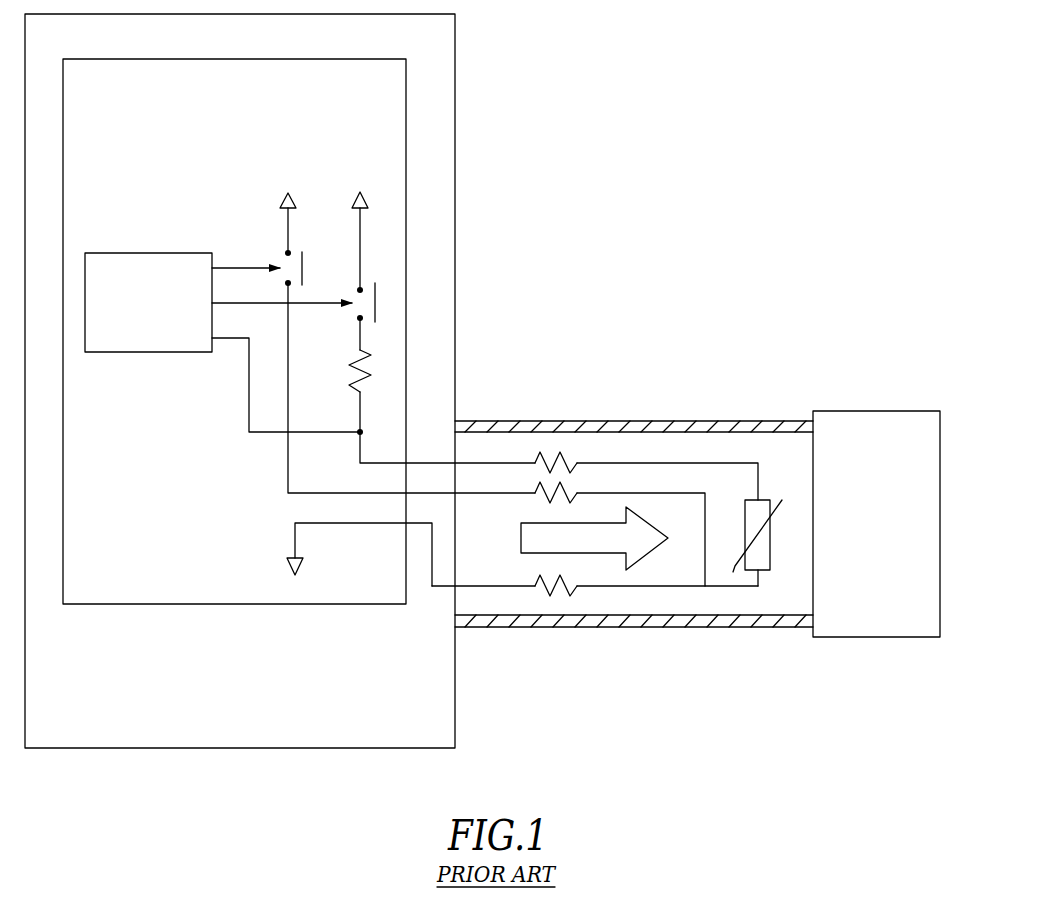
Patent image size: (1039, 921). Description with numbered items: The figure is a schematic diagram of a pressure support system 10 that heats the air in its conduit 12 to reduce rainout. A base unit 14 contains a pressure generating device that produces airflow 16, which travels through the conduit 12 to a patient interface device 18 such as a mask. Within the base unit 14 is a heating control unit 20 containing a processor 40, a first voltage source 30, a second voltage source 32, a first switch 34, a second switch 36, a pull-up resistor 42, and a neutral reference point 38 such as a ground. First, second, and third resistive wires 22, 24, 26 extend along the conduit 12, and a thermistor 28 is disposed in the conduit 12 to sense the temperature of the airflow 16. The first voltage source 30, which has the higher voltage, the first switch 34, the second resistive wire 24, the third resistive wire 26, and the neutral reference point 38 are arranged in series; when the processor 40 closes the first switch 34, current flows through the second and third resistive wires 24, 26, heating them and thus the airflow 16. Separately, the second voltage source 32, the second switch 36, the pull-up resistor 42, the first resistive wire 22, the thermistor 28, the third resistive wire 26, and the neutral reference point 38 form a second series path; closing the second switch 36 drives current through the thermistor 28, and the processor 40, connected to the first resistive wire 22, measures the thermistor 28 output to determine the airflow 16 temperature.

The pressure support system 10 is at (641, 218).
The conduit 12 is at (605, 421).
The base unit 14 is at (456, 85).
The airflow 16 is at (640, 540).
The patient interface device 18 is at (847, 411).
The heating control unit 20 is at (120, 59).
The first resistive wire 22 is at (548, 441).
The second resistive wire 24 is at (532, 502).
The third resistive wire 26 is at (556, 602).
The thermistor 28 is at (774, 572).
The first voltage source 30 is at (285, 194).
The second voltage source 32 is at (356, 192).
The first switch 34 is at (308, 256).
The second switch 36 is at (378, 288).
The neutral reference point 38 is at (286, 564).
The processor 40 is at (130, 253).
The pull-up resistor 42 is at (382, 348).